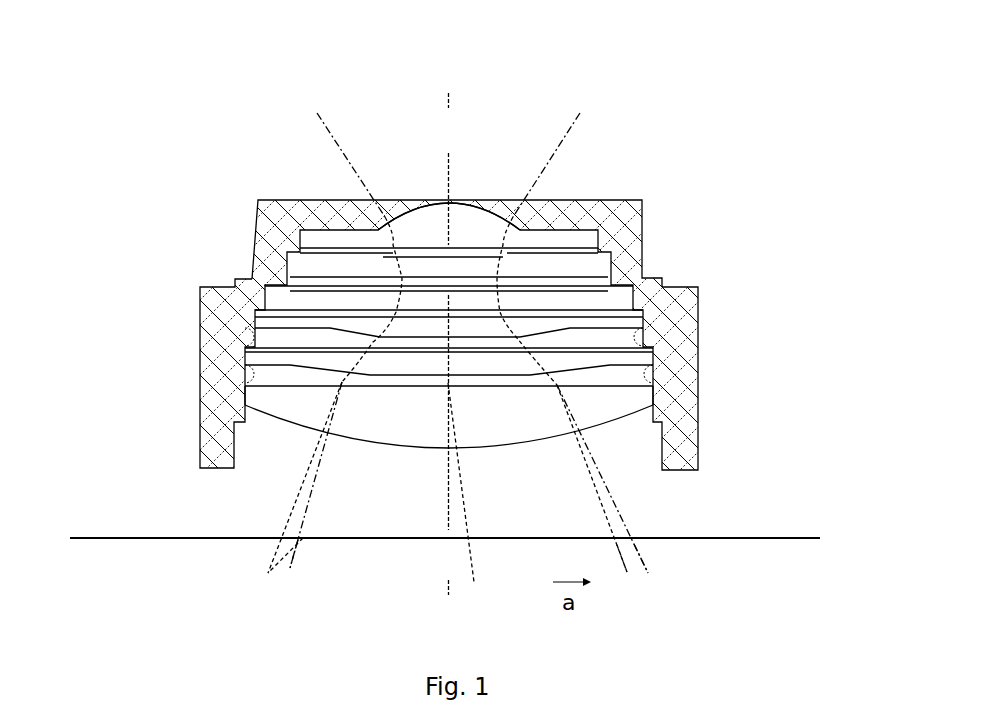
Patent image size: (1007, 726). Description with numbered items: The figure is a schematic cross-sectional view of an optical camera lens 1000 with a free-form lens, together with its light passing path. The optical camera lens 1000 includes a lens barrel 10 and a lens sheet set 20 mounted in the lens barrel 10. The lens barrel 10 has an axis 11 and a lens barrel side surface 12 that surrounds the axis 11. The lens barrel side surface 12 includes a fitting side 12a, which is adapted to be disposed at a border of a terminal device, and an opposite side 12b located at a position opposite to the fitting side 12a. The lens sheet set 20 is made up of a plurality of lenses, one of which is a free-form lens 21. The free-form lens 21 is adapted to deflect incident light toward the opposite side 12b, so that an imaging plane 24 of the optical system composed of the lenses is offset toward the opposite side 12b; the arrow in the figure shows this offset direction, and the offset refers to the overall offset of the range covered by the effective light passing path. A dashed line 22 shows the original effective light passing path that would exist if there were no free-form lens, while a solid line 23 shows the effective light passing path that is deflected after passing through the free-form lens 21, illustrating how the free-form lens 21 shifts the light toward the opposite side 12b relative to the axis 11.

The optical camera lens 1000 is at (437, 355).
The lens barrel 10 is at (700, 320).
The axis 11 is at (448, 173).
The lens barrel side surface 12 is at (437, 350).
The fitting side 12a is at (200, 390).
The opposite side 12b is at (700, 388).
The lens sheet set 20 is at (474, 201).
The free-form lens 21 is at (517, 425).
The dashed line 22 is at (283, 530).
The solid line 23 is at (290, 542).
The imaging plane 24 is at (410, 538).